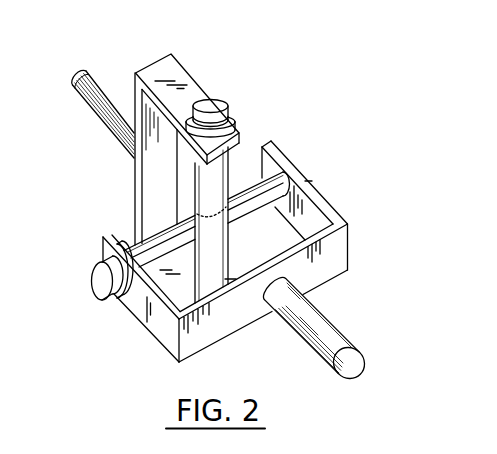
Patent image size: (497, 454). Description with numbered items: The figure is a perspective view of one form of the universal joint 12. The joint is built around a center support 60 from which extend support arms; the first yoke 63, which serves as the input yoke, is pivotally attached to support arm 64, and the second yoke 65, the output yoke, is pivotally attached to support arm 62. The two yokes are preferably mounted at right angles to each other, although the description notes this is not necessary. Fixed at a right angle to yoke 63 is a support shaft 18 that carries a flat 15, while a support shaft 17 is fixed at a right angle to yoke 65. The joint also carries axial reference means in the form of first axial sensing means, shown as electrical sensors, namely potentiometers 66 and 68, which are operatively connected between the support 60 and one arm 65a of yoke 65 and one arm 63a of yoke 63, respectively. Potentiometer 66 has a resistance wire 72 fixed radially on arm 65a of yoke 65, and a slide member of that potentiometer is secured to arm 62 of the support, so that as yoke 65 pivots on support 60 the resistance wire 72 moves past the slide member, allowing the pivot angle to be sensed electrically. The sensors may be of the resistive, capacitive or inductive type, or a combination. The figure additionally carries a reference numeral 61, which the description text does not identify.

The universal joint 12 is at (228, 208).
The flat 15 is at (86, 71).
The support shaft 17 is at (341, 324).
The support shaft 18 is at (100, 73).
The center support 60 is at (276, 152).
The pin end 61 is at (271, 201).
The support arm 62 is at (157, 244).
The first yoke 63 is at (138, 184).
The arm of yoke 63a is at (241, 126).
The support arm 64 is at (199, 171).
The second yoke 65 is at (342, 252).
The arm of yoke 65a is at (164, 330).
The potentiometer 66 is at (105, 289).
The potentiometer 68 is at (213, 103).
The resistance wire 72 is at (123, 295).